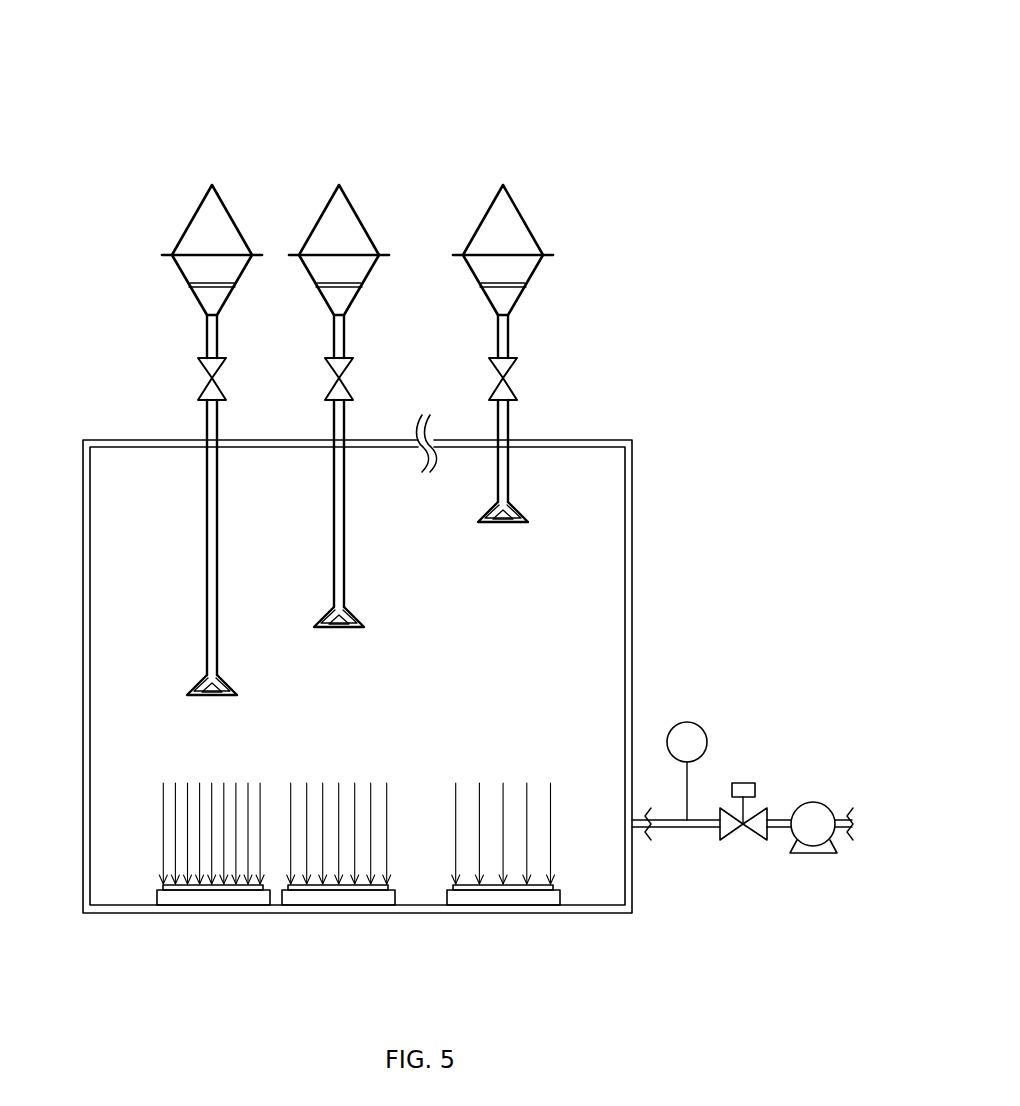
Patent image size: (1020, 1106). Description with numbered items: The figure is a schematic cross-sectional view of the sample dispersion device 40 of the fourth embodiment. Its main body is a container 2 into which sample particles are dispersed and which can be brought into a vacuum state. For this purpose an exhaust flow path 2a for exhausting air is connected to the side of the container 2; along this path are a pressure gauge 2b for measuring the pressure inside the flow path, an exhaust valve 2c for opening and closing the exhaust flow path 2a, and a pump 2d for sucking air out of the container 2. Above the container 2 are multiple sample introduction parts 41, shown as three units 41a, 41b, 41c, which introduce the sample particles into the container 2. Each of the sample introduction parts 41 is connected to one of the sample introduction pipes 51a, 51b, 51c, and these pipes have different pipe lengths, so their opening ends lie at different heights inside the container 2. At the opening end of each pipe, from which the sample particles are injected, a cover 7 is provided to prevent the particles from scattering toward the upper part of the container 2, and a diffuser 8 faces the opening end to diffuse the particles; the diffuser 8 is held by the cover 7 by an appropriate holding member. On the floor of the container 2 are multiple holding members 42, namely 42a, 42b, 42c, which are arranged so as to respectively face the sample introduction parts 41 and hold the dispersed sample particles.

The sample dispersion device 40 is at (630, 151).
The container 2 is at (134, 440).
The exhaust flow path 2a is at (707, 831).
The pressure gauge 2b is at (687, 722).
The exhaust valve 2c is at (745, 782).
The pump 2d is at (813, 802).
The sample introduction parts 41 is at (309, 271).
The sample introduction part 41a is at (166, 208).
The sample introduction part 41b is at (296, 204).
The sample introduction part 41c is at (462, 204).
The sample introduction pipe 51a is at (219, 541).
The sample introduction pipe 51b is at (346, 505).
The sample introduction pipe 51c is at (510, 421).
The cover 7 is at (222, 691).
The diffuser 8 is at (211, 696).
The holding members 42 is at (358, 866).
The holding member 42a is at (211, 891).
The holding member 42b is at (315, 891).
The holding member 42c is at (504, 891).